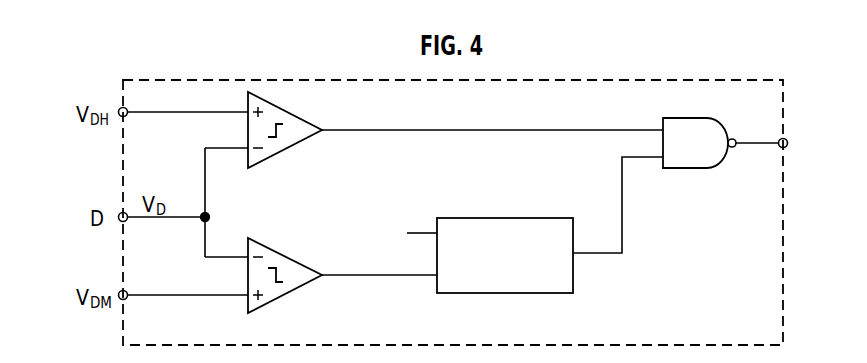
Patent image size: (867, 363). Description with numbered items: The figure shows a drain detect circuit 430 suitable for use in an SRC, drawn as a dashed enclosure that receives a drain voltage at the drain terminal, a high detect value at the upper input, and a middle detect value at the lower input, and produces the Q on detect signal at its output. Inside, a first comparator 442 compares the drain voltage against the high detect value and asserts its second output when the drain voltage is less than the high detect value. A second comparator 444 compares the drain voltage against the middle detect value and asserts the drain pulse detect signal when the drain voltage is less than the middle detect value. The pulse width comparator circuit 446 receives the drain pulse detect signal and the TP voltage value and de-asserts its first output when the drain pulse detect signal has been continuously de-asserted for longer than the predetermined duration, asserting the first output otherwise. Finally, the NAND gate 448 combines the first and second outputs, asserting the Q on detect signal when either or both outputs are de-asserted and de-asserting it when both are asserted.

The drain detect circuit 430 is at (170, 79).
The first comparator 442 is at (298, 162).
The second comparator 444 is at (286, 297).
The pulse width comparator circuit 446 is at (488, 293).
The NAND gate 448 is at (688, 117).